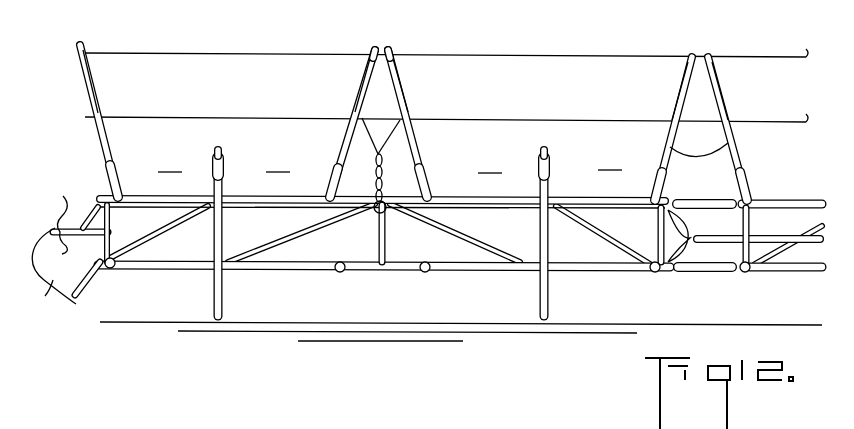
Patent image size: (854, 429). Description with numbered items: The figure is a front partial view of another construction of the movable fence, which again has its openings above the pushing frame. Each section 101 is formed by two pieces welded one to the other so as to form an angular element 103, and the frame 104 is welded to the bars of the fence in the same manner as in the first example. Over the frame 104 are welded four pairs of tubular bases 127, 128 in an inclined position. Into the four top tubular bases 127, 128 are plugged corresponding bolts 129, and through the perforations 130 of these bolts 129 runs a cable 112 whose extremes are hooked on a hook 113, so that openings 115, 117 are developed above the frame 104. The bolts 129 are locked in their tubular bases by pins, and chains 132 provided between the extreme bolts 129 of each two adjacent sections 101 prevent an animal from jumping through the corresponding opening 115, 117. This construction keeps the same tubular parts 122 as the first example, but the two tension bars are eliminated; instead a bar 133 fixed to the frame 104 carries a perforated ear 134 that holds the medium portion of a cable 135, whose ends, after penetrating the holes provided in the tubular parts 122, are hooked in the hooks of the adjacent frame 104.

The section 101 is at (369, 276).
The angular element 103 is at (226, 317).
The frame 104 is at (182, 273).
The cable 112 is at (503, 118).
The hook 113 is at (402, 197).
The opening 115 is at (386, 161).
The opening 117 is at (392, 159).
The tubular part 122 is at (109, 218).
The tubular base 127 is at (118, 168).
The tubular base 128 is at (336, 274).
The bolt 129 is at (365, 105).
The perforation 130 is at (367, 52).
The chain 132 is at (698, 154).
The bar 133 is at (134, 241).
The perforated ear 134 is at (57, 215).
The cable 135 is at (47, 276).